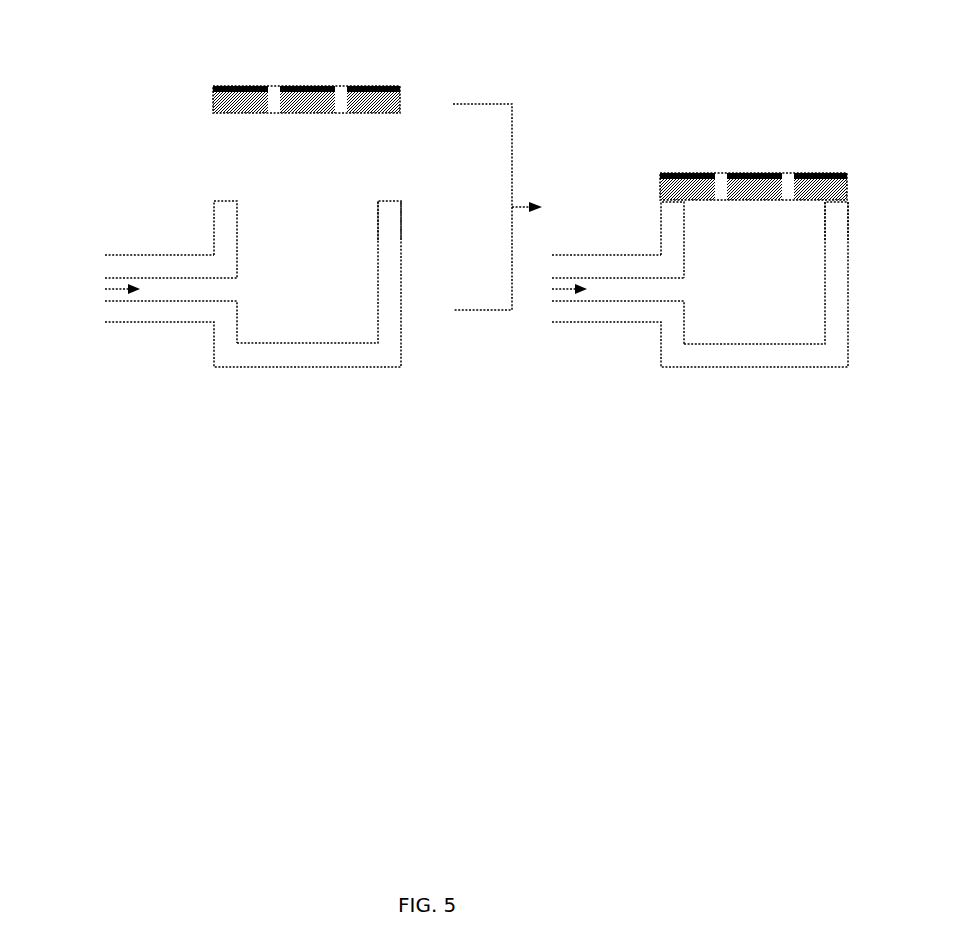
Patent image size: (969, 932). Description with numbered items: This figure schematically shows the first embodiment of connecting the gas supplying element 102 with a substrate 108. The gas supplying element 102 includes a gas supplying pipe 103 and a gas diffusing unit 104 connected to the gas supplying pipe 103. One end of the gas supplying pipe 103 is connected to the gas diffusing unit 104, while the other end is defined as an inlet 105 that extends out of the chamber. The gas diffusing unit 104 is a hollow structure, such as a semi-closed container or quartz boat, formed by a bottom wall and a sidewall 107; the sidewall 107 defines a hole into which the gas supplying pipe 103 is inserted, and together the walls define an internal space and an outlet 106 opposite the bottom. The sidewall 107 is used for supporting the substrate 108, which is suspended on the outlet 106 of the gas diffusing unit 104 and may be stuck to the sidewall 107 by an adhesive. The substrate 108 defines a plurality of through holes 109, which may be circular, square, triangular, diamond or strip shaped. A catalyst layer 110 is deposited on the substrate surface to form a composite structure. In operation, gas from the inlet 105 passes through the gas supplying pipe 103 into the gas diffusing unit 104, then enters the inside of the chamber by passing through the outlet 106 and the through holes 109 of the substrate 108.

The gas supplying element 102 is at (148, 184).
The gas supplying pipe 103 is at (140, 257).
The gas diffusing unit 104 is at (386, 288).
The inlet 105 is at (112, 282).
The outlet 106 is at (327, 208).
The sidewall 107 is at (228, 212).
The substrate 108 is at (397, 86).
The through holes 109 is at (338, 100).
The catalyst layer 110 is at (218, 86).